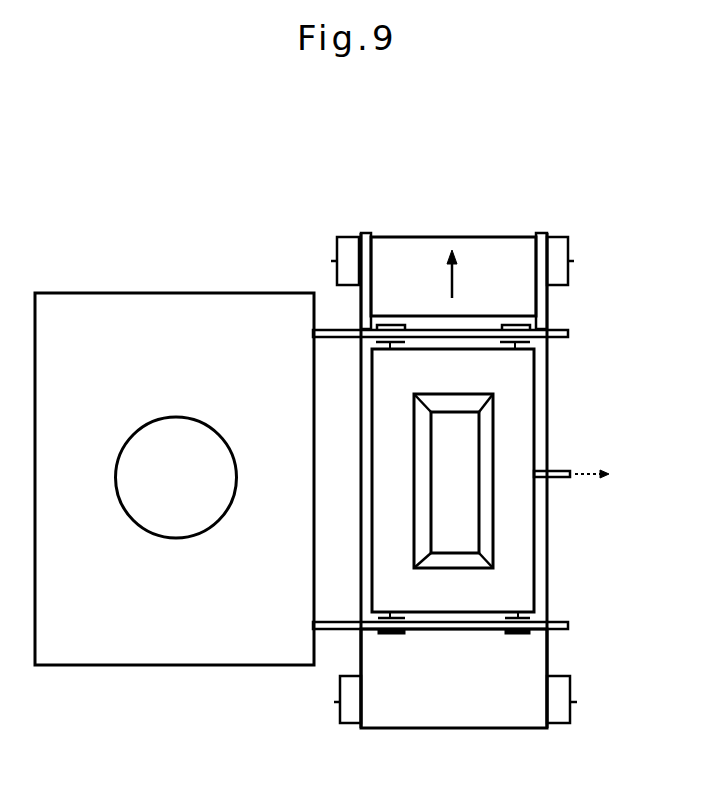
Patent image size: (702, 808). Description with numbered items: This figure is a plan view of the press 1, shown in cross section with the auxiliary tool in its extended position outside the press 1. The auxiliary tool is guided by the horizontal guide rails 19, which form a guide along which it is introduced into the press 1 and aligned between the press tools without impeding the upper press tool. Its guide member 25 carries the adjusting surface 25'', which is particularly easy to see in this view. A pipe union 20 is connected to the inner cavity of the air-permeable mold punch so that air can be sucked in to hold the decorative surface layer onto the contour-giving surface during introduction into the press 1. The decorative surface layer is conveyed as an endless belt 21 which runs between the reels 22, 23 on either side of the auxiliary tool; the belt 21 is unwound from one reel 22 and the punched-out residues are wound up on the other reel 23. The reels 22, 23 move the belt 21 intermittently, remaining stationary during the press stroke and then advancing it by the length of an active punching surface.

The press 1 is at (165, 652).
The horizontal guide rails 19 is at (568, 336).
The pipe union 20 is at (556, 480).
The endless belt 21 is at (402, 262).
The reel 22 is at (555, 247).
The reel 23 is at (560, 712).
The guide member 25 is at (481, 480).
The adjusting surface 25'' is at (512, 481).